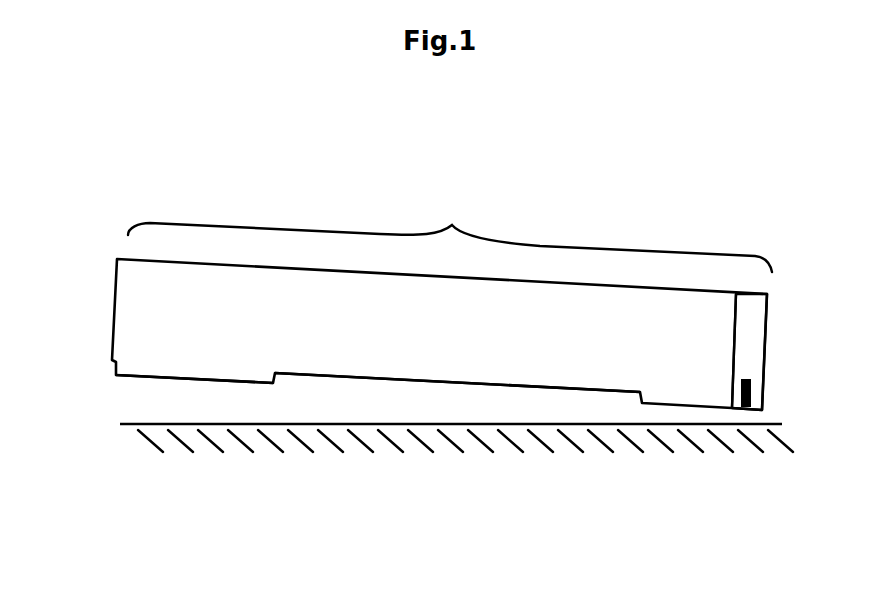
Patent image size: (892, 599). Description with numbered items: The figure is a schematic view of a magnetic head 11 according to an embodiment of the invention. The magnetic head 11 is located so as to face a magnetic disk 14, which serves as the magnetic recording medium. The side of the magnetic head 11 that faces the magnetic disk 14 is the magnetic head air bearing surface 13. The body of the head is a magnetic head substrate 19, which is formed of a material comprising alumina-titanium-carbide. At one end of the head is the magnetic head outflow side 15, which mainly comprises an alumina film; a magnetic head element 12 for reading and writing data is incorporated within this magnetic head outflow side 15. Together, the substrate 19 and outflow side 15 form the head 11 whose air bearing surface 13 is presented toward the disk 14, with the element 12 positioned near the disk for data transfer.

The magnetic head 11 is at (452, 213).
The magnetic head element 12 is at (745, 412).
The magnetic head air bearing surface 13 is at (403, 382).
The magnetic disk 14 is at (225, 424).
The magnetic head outflow side 15 is at (743, 344).
The magnetic head substrate 19 is at (355, 337).